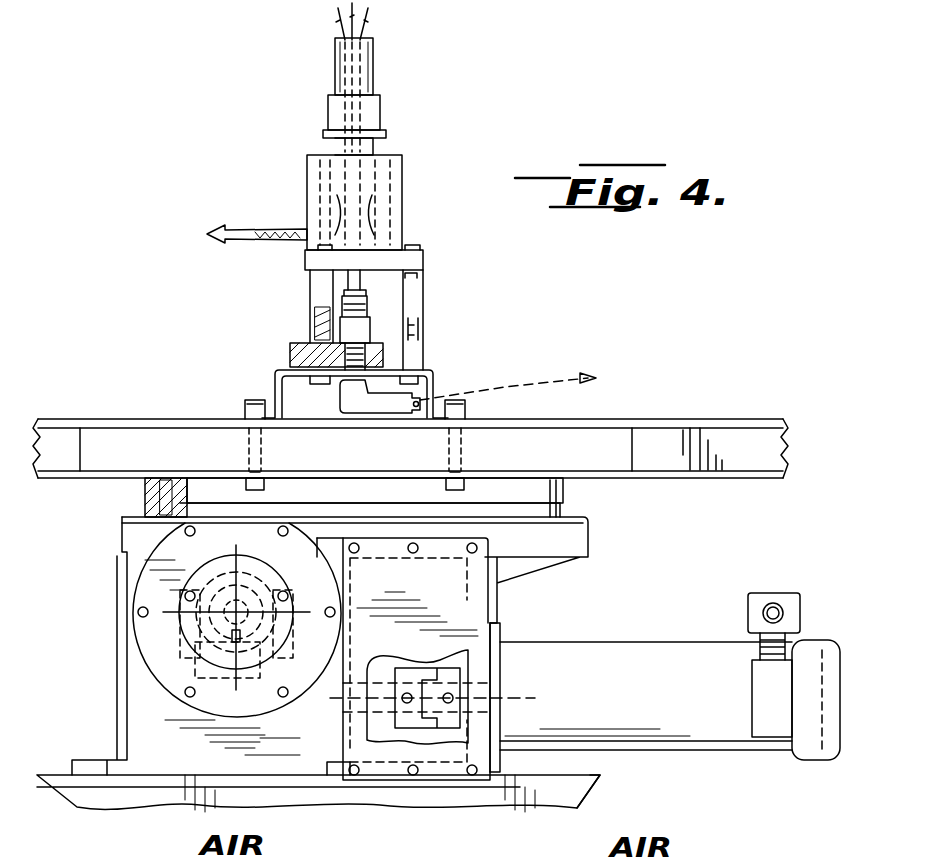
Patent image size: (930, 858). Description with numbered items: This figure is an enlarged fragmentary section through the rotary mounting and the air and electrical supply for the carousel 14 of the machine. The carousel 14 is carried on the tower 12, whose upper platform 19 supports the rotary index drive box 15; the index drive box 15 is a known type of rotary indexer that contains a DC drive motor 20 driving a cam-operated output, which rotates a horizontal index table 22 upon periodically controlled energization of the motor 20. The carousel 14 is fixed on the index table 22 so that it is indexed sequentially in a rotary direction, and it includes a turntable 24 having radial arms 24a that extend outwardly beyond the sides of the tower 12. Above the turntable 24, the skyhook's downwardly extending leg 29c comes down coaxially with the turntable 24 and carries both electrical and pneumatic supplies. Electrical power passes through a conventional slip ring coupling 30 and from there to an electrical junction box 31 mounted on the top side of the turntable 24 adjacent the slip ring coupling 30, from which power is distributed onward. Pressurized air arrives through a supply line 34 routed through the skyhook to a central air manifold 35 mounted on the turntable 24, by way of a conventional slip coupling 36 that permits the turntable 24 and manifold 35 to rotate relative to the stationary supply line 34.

The tower 12 is at (105, 768).
The carousel 14 is at (160, 412).
The rotary index drive box 15 is at (125, 590).
The upper platform 19 is at (592, 778).
The DC drive motor 20 is at (652, 652).
The horizontal index table 22 is at (565, 491).
The turntable 24 is at (675, 480).
The radial arms 24a is at (63, 462).
The downwardly extending leg 29c is at (336, 60).
The slip ring coupling 30 is at (397, 172).
The electrical junction box 31 is at (168, 246).
The supply line 34 is at (342, 22).
The central air manifold 35 is at (732, 373).
The slip coupling 36 is at (367, 313).